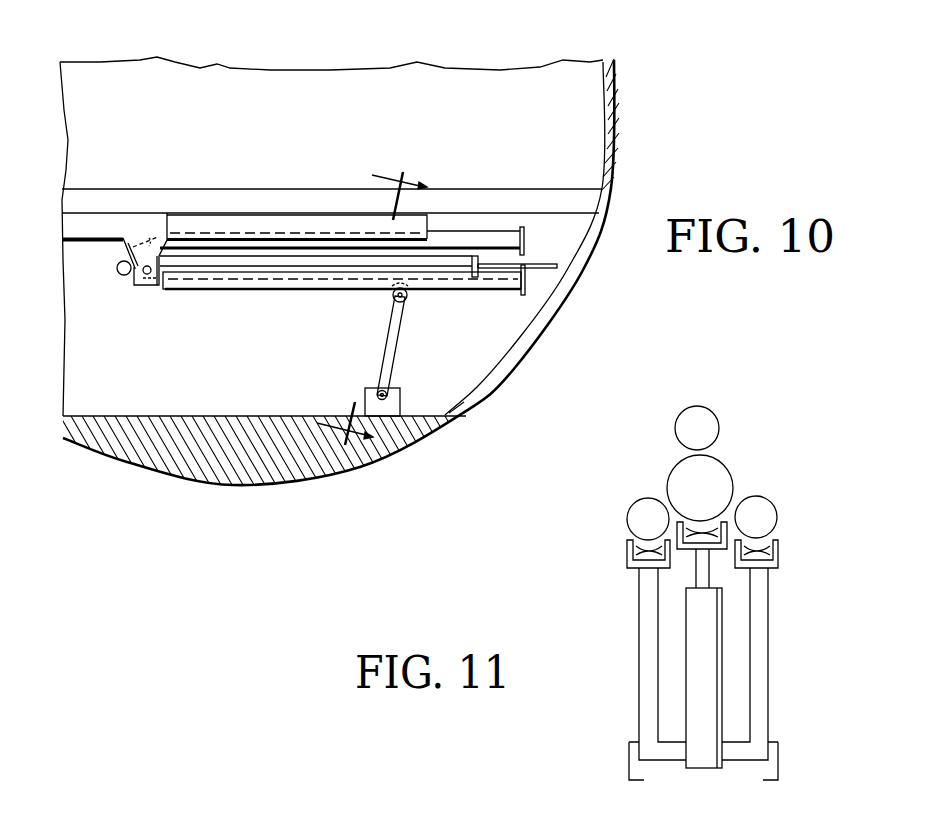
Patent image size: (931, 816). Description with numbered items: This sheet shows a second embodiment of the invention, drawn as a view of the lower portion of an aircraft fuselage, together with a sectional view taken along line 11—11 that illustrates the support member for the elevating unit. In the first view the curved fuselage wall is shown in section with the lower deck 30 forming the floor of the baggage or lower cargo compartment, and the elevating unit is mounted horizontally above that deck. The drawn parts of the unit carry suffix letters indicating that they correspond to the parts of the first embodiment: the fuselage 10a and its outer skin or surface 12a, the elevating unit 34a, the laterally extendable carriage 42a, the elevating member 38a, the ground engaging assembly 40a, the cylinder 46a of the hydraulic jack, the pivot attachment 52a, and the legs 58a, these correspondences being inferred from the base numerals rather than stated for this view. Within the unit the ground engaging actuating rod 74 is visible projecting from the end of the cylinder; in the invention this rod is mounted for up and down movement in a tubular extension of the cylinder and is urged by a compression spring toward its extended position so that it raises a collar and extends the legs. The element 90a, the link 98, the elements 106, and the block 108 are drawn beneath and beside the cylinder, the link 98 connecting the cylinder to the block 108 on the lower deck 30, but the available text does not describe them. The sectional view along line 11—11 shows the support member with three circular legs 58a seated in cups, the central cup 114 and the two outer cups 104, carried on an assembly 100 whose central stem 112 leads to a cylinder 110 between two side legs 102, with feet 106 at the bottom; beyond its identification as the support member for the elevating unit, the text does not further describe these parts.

In FIG. 10, the bowl / vessel 10a is at (568, 315).
In FIG. 10, the vessel wall rim 12a is at (617, 143).
In FIG. 10, the lower deck 30 is at (222, 414).
In FIG. 10, the guide surface line 34a is at (475, 181).
In FIG. 10, the support bar 90a is at (87, 225).
In FIG. 10, the bracket 42a is at (152, 222).
In FIG. 10, the roller 52a is at (142, 289).
In FIG. 10, the upper cylinder 38a is at (317, 263).
In FIG. 10, the piston rod 40a is at (503, 237).
In FIG. 10, the ground engaging actuating rod 74 is at (543, 262).
In FIG. 10, the lower cylinder / roller 46a is at (215, 268).
In FIG. 11, the lower cylinder / roller 46a is at (720, 470).
In FIG. 10, the link 98 is at (399, 329).
In FIG. 10, the pivot / foot 106 is at (381, 390).
In FIG. 11, the pivot / foot 106 is at (768, 742).
In FIG. 10, the block 108 is at (390, 403).
In FIG. 10, the section line 11— 11 is at (373, 328).
In FIG. 11, the small rollers 58a is at (713, 413).
In FIG. 11, the center cup 114 is at (697, 522).
In FIG. 11, the side cups 104 is at (643, 537).
In FIG. 11, the stem 112 is at (710, 578).
In FIG. 11, the cylinder 110 is at (710, 685).
In FIG. 11, the legs 102 is at (643, 605).
In FIG. 11, the carriage assembly 100 is at (701, 664).